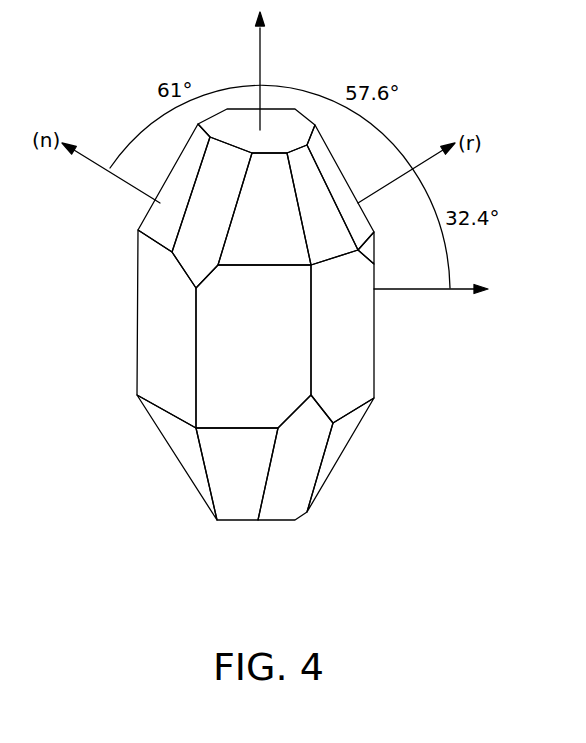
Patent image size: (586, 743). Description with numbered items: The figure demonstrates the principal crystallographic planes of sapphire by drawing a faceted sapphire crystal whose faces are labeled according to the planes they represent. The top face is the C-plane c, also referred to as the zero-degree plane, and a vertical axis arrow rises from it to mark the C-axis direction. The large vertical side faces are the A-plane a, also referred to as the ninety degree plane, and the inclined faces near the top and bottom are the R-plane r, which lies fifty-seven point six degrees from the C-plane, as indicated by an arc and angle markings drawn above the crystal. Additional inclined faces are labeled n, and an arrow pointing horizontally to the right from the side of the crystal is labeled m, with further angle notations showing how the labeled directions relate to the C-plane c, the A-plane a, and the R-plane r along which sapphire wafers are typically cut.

The A-plane a is at (255, 329).
The R-plane r is at (273, 322).
The n face n is at (255, 322).
The C-plane c is at (256, 131).
The m axis direction m is at (450, 290).